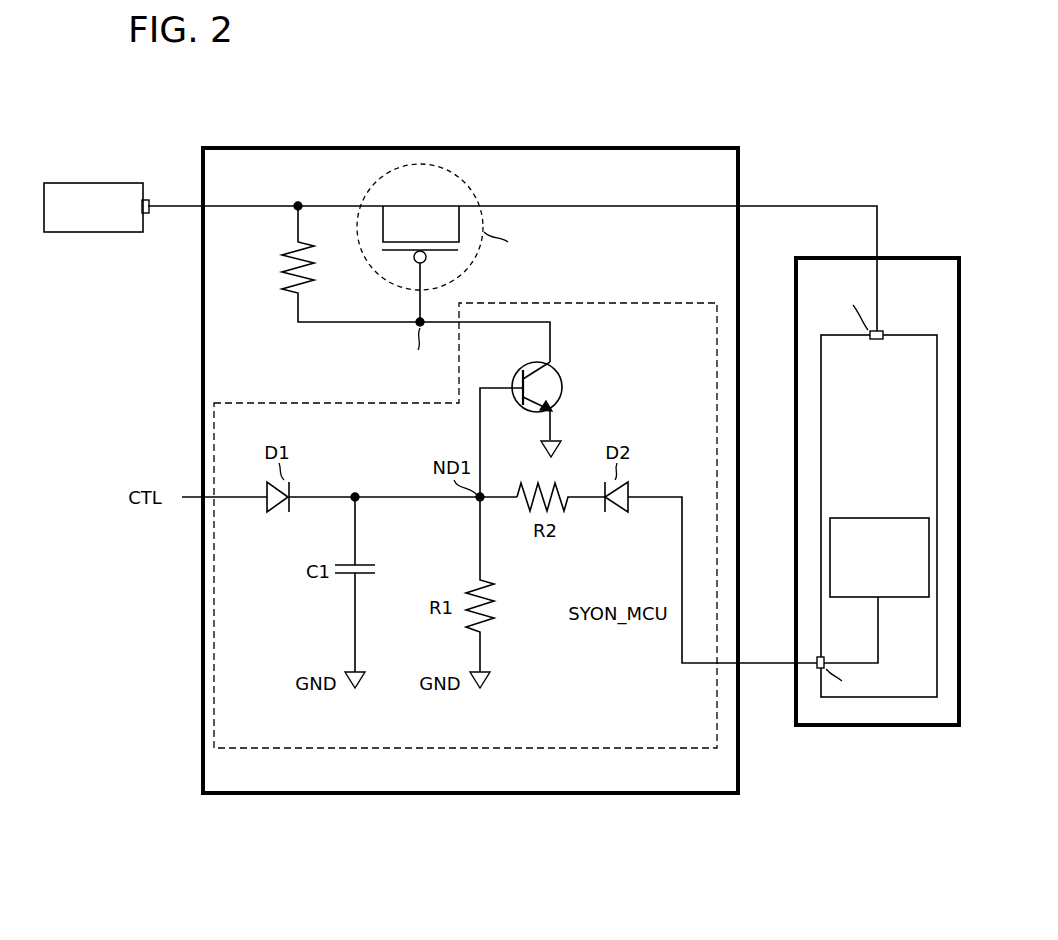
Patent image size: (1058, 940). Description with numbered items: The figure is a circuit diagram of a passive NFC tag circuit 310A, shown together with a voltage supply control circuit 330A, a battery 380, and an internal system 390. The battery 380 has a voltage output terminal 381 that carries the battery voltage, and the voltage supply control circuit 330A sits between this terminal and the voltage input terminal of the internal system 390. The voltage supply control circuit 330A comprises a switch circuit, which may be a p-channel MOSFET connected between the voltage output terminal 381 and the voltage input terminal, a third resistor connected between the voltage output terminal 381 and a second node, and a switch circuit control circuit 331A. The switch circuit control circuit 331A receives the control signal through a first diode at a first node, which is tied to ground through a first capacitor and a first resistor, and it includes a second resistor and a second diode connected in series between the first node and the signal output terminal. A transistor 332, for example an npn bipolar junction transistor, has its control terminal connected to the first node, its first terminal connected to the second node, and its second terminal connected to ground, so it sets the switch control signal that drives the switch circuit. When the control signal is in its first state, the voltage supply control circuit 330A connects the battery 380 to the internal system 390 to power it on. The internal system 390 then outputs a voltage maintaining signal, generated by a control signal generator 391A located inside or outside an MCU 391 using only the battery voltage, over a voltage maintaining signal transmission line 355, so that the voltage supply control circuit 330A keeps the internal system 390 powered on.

The passive NFC tag circuit 310A is at (203, 125).
The voltage supply control circuit 330A is at (384, 147).
The switch circuit control circuit 331A is at (292, 402).
The transistor 332 is at (563, 385).
The voltage maintaining signal transmission line 355 is at (750, 662).
The battery 380 is at (84, 183).
The voltage output terminal 381 is at (150, 200).
The internal system 390 is at (918, 258).
The MCU 391 is at (905, 335).
The control signal generator 391A is at (858, 518).